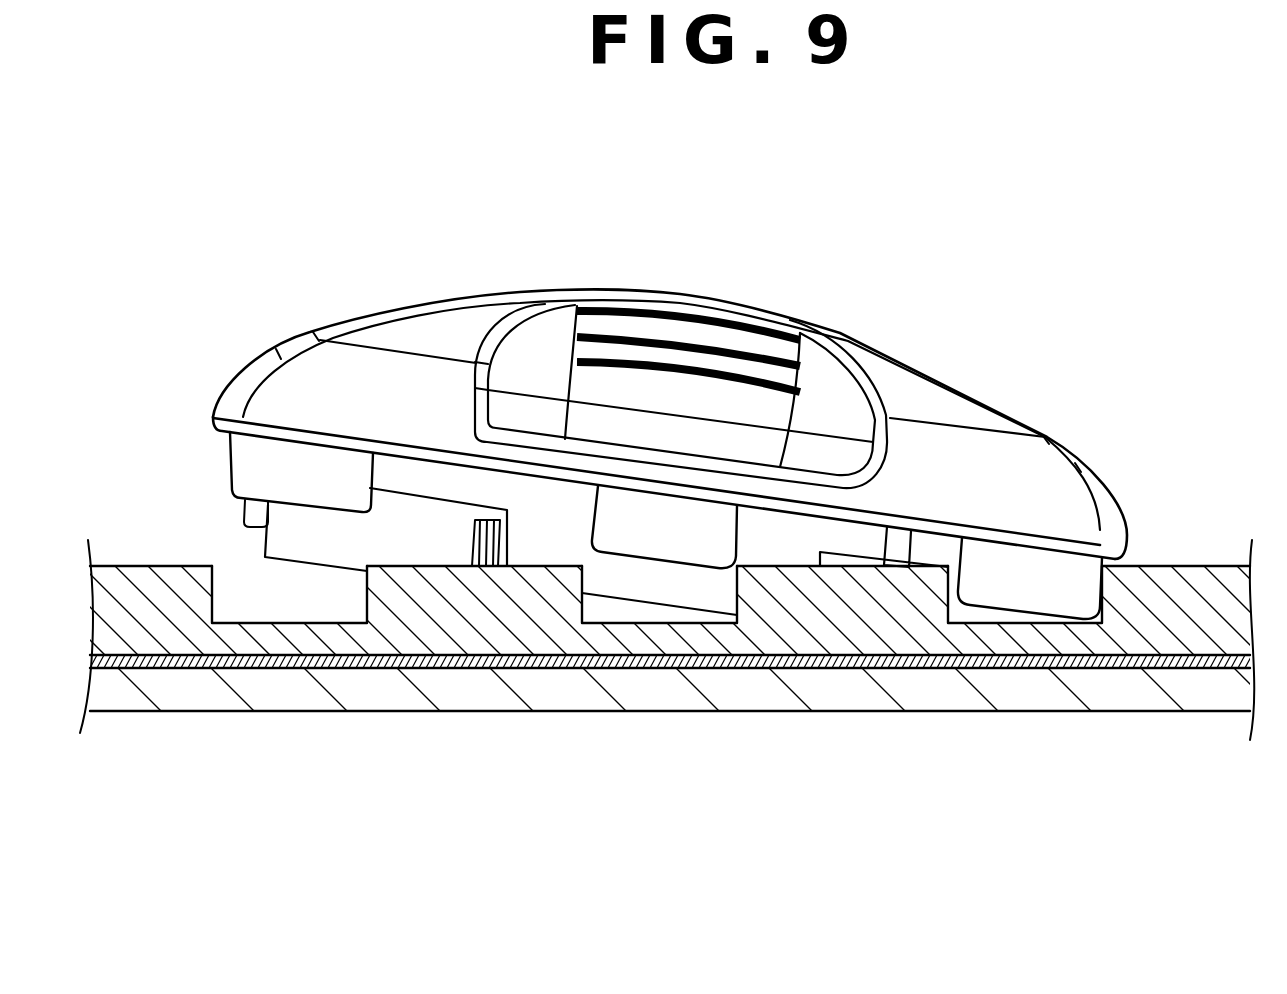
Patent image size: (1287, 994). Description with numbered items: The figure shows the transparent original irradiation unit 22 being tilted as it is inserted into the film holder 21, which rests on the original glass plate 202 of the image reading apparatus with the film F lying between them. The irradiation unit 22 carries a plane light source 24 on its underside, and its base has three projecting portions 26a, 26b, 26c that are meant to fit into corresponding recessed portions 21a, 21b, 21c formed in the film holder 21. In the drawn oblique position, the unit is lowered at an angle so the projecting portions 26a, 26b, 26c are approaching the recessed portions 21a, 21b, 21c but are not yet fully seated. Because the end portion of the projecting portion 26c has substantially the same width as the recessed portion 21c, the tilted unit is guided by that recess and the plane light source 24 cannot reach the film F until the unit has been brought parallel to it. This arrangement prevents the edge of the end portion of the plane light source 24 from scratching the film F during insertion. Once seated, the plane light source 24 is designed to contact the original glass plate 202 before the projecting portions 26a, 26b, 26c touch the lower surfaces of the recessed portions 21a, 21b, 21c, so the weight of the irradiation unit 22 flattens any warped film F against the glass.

The film holder 21 is at (117, 577).
The recessed portion 21a is at (289, 613).
The recessed portion 21b is at (620, 613).
The recessed portion 21c is at (963, 612).
The transparent original irradiation unit 22 is at (933, 357).
The plane light source 24 is at (297, 548).
The projecting portion 26a is at (242, 460).
The projecting portion 26b is at (642, 507).
The projecting portion 26c is at (1067, 570).
The film F is at (1073, 557).
The original glass plate 202 is at (1170, 690).